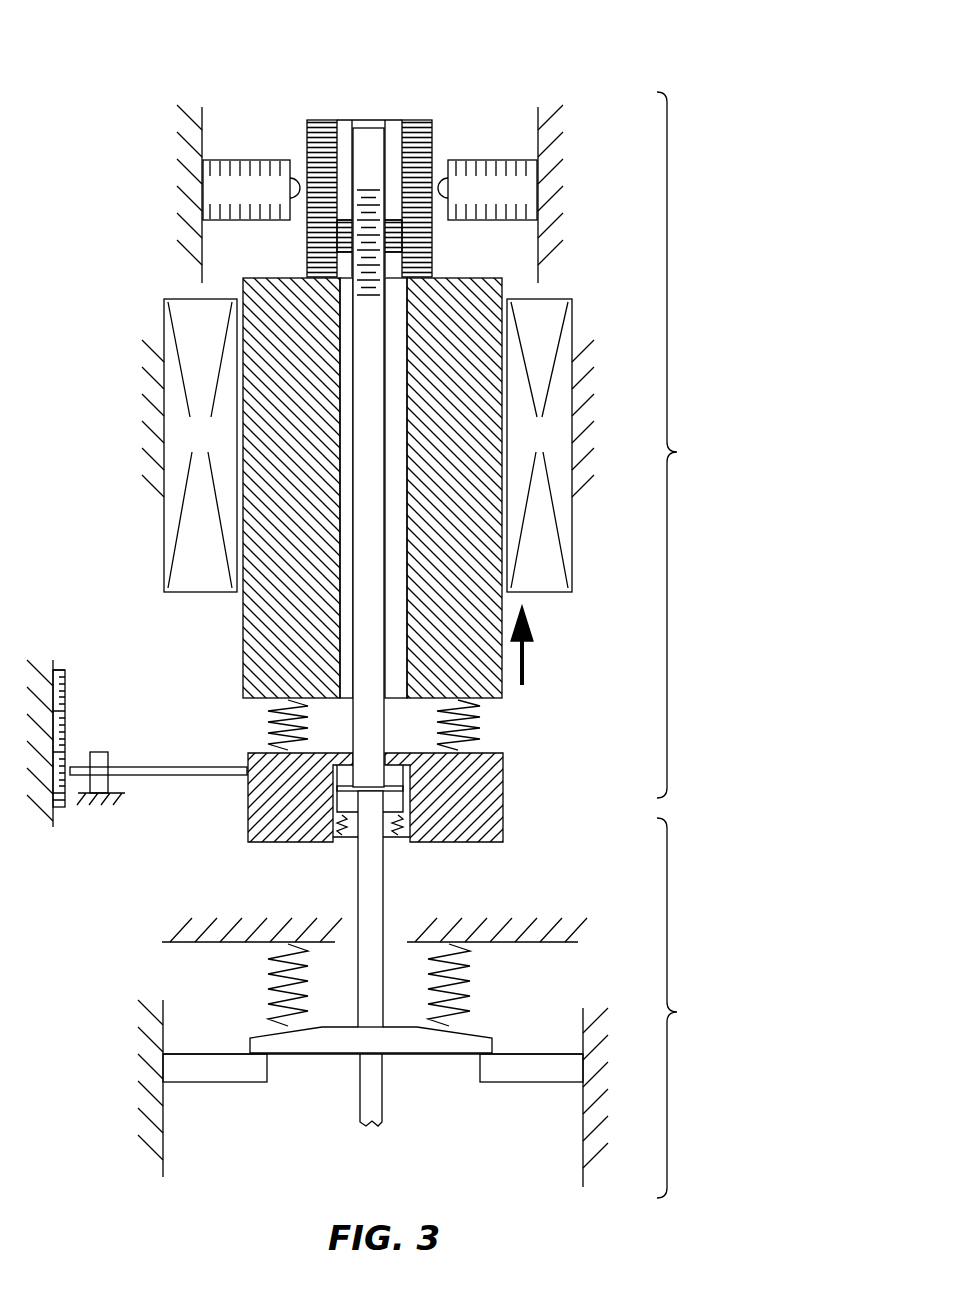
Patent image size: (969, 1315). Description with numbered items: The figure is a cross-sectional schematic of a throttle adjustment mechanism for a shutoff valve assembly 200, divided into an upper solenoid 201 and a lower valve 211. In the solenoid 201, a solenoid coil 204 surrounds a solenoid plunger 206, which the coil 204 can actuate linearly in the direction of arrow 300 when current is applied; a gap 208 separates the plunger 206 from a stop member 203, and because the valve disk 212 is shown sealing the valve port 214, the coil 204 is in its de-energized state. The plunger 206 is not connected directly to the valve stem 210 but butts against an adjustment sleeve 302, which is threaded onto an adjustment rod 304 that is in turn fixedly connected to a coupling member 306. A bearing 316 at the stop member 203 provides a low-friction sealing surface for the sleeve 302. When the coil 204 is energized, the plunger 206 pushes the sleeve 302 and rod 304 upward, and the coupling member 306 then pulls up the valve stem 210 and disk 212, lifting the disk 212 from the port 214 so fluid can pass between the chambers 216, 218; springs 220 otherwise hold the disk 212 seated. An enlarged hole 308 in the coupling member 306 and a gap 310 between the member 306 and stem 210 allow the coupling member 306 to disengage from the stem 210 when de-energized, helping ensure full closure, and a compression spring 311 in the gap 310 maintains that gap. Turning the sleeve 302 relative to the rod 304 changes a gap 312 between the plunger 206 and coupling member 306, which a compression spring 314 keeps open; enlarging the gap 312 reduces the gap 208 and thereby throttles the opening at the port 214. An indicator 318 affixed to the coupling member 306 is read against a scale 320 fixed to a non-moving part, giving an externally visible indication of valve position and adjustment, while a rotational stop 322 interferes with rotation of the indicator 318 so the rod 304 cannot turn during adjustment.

The valve assembly 200 is at (528, 34).
The solenoid 201 is at (700, 445).
The valve 211 is at (700, 1008).
The stop member 203 is at (267, 206).
The solenoid coil 204 is at (220, 450).
The solenoid plunger 206 is at (308, 513).
The gap 208 is at (285, 263).
The valve stem 210 is at (384, 890).
The valve disk 212 is at (408, 1056).
The valve port 214 is at (342, 1086).
The chamber 216 is at (228, 1045).
The chamber 218 is at (228, 1136).
The springs 220 is at (270, 986).
The arrow 300 is at (524, 665).
The adjustment sleeve 302 is at (322, 122).
The adjustment rod 304 is at (381, 127).
The coupling member 306 is at (503, 798).
The enlarged hole 308 is at (392, 840).
The gap 310 is at (350, 842).
The compression spring 311 is at (338, 840).
The gap 312 is at (435, 738).
The compression spring 314 is at (270, 722).
The bearing 316 is at (441, 178).
The indicator 318 is at (120, 767).
The scale 320 is at (62, 670).
The rotational stop 322 is at (97, 751).